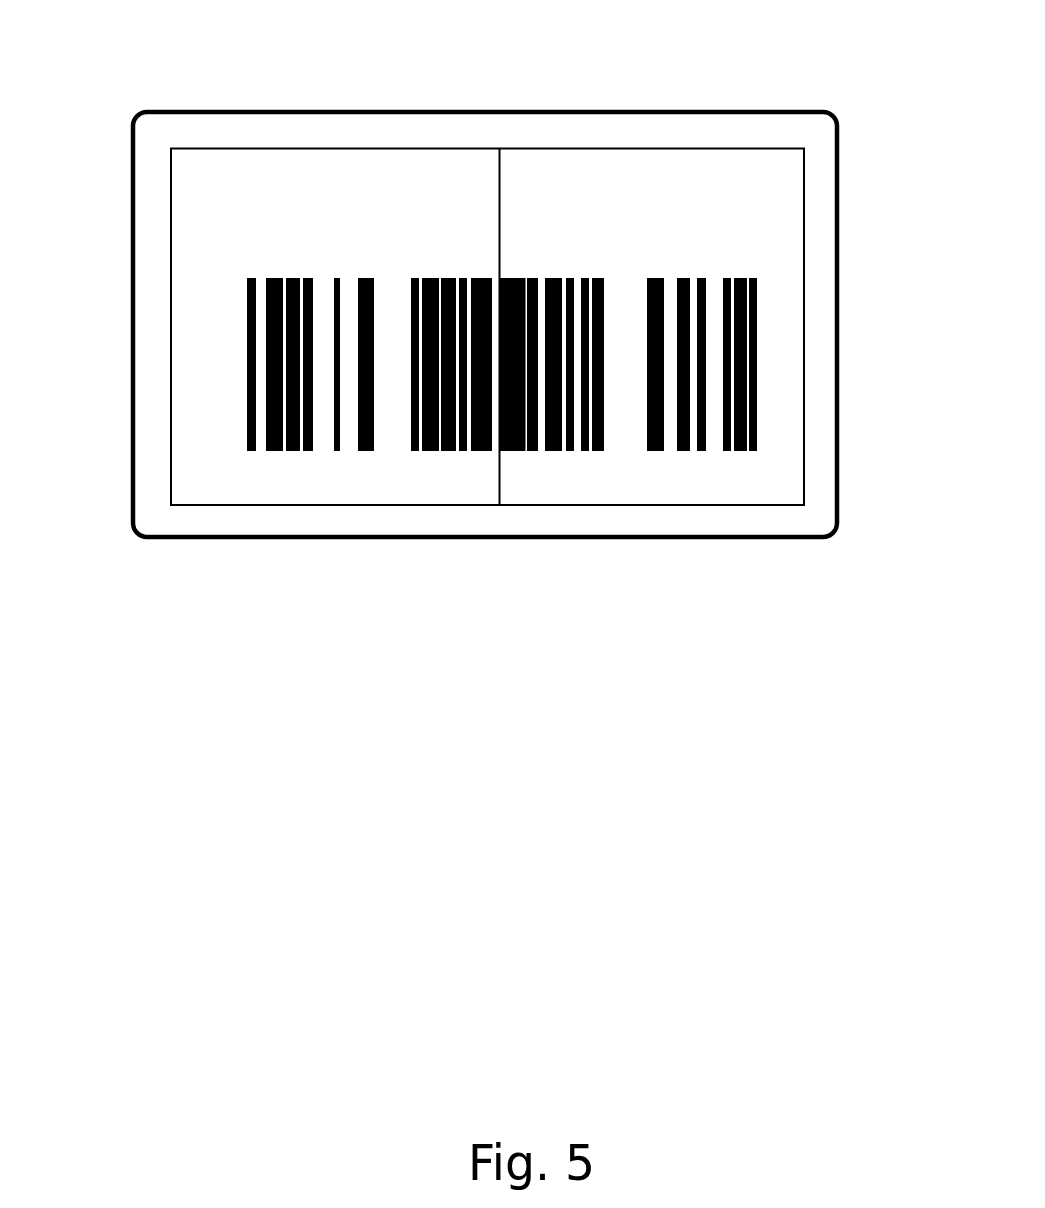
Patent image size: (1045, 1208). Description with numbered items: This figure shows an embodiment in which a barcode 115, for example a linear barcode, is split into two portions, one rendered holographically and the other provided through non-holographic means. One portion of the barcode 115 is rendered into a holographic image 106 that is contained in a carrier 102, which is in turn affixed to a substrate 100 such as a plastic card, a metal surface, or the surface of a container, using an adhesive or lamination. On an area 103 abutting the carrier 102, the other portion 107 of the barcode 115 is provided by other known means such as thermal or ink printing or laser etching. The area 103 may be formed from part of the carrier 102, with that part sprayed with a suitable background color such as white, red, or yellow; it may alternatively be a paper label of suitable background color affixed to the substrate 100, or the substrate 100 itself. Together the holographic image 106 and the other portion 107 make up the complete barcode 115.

The substrate 100 is at (729, 126).
The carrier 102 is at (765, 203).
The area 103 is at (216, 179).
The holographic image 106 is at (745, 358).
The other portion 107 is at (267, 417).
The barcode 115 is at (447, 237).